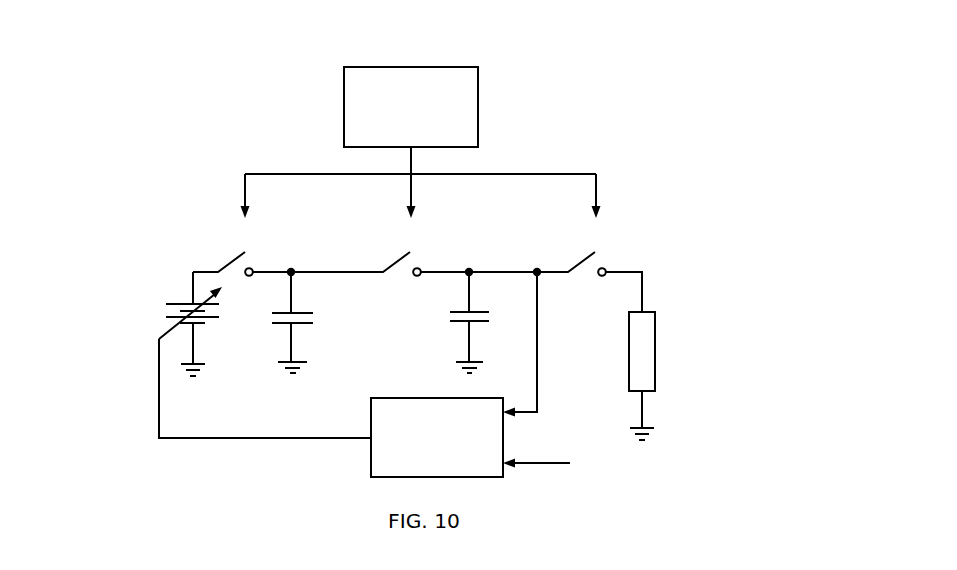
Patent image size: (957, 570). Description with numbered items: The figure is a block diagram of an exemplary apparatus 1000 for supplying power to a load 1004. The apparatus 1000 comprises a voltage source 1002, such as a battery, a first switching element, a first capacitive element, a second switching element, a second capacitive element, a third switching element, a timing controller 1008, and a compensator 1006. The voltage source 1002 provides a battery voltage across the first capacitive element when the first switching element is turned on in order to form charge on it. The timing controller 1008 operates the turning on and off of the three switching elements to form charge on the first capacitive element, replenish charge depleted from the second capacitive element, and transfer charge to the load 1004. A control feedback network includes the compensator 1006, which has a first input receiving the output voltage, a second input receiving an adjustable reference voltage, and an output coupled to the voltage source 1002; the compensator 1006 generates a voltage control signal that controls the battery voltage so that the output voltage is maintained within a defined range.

The apparatus 1000 is at (657, 103).
The voltage source 1002 is at (179, 303).
The load 1004 is at (652, 310).
The compensator 1006 is at (437, 398).
The timing controller 1008 is at (478, 101).